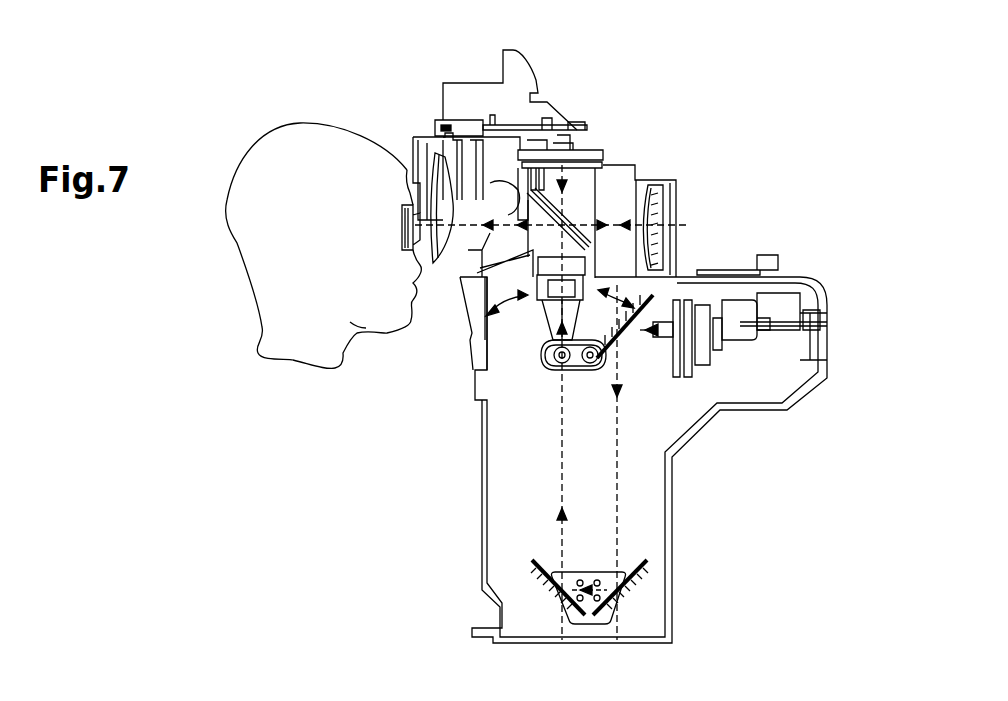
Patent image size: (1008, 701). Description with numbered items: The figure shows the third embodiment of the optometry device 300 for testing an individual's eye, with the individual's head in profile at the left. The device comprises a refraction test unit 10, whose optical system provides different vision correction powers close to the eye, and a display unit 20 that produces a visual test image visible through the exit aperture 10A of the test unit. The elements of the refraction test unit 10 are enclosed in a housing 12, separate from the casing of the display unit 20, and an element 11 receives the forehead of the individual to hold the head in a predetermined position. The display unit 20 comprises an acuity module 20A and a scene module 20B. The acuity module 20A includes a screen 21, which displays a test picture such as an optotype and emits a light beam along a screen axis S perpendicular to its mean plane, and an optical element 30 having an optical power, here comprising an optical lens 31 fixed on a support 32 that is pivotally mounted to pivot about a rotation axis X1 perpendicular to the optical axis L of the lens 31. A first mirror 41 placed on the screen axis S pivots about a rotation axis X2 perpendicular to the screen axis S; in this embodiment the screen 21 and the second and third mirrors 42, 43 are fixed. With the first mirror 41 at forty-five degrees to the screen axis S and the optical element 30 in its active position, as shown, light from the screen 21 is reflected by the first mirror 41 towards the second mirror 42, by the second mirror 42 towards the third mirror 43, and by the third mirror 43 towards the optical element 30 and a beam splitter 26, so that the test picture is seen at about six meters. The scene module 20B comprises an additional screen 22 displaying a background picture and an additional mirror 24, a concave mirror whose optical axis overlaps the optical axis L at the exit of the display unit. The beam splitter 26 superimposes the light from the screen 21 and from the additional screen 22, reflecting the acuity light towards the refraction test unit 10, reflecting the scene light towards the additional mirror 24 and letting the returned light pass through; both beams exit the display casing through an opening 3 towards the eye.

The optometry device 300 is at (676, 93).
The refraction test unit 10 is at (411, 108).
The forehead-receiving element 11 is at (410, 170).
The housing 12 is at (440, 157).
The opening 3 is at (508, 216).
The exit aperture 10A is at (403, 227).
The additional screen 22 is at (593, 160).
The beam splitter 26 is at (557, 210).
The display unit 20 is at (814, 250).
The scene module 20B is at (660, 160).
The additional mirror 24 is at (655, 212).
The acuity module 20A is at (702, 518).
The screen 21 is at (680, 372).
The optical element 30 is at (534, 314).
The optical lens 31 is at (547, 291).
The support 32 is at (552, 362).
The first mirror 41 is at (628, 330).
The second mirror 42 is at (640, 557).
The third mirror 43 is at (542, 562).
The screen axis S is at (660, 335).
The rotation axis X1 is at (544, 402).
The rotation axis X2 is at (599, 462).
The optical axis L is at (562, 475).